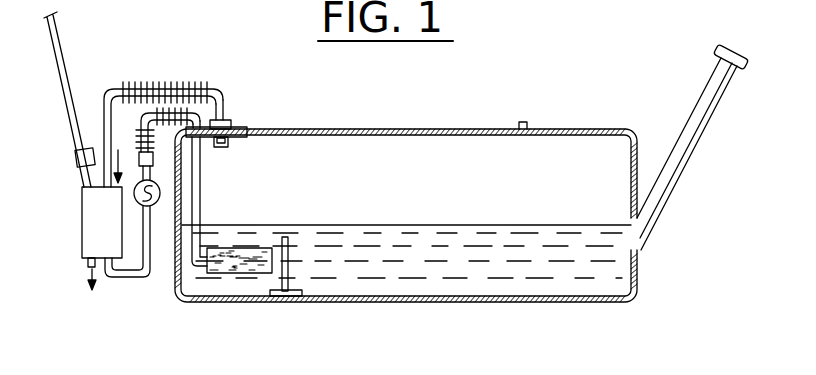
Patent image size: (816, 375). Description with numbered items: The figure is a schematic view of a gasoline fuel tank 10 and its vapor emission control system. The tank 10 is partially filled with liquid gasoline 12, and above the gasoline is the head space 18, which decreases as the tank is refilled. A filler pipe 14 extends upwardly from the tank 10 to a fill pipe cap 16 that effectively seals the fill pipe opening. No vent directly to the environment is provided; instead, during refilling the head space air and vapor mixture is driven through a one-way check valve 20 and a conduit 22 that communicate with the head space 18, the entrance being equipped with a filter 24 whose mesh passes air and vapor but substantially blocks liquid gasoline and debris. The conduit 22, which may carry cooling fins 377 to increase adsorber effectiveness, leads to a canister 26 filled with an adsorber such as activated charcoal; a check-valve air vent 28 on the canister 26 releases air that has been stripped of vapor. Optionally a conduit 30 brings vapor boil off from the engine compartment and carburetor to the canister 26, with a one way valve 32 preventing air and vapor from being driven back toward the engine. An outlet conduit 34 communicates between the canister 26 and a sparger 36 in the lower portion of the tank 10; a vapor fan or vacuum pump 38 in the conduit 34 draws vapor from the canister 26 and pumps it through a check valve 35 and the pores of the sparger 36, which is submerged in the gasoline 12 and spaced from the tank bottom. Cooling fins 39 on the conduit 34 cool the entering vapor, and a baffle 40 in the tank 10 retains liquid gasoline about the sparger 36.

The gasoline fuel tank 10 is at (604, 130).
The liquid gasoline 12 is at (537, 287).
The filler pipe 14 is at (682, 167).
The fill pipe cap 16 is at (739, 52).
The head space 18 is at (490, 194).
The check valve 20 is at (237, 130).
The conduit 22 is at (182, 93).
The filter 24 is at (227, 147).
The canister 26 is at (82, 222).
The check-valve air vent 28 is at (86, 263).
The conduit 30 is at (77, 73).
The one way valve 32 is at (76, 160).
The outlet conduit 34 is at (128, 275).
The check valve 35 is at (139, 158).
The sparger 36 is at (250, 262).
The vapor fan or vacuum pump 38 is at (157, 203).
The cooling fins 39 is at (187, 115).
The baffle 40 is at (288, 279).
The cooling fins 377 is at (142, 83).